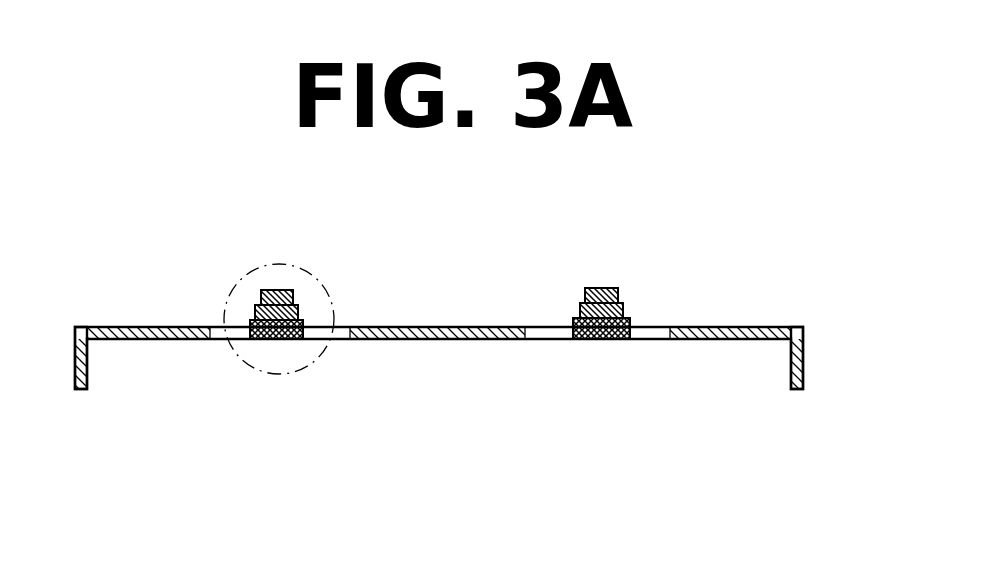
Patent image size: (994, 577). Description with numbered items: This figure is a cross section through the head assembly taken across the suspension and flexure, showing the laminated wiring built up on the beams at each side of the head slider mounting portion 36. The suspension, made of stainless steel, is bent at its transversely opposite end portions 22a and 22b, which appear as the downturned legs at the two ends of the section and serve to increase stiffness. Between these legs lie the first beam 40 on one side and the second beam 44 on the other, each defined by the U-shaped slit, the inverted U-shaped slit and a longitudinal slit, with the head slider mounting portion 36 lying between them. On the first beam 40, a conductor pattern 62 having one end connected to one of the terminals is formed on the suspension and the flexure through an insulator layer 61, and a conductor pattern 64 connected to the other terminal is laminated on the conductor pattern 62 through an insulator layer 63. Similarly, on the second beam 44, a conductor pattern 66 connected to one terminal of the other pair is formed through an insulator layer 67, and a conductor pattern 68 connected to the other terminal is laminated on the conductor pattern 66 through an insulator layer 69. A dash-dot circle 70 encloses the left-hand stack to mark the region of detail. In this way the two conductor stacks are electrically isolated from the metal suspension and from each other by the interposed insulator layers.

The head slider mounting portion 36 is at (437, 327).
The transversely opposite end portion of the suspension 22a is at (82, 382).
The transversely opposite end portion of the suspension 22b is at (796, 385).
The first beam 40 is at (274, 339).
The second beam 44 is at (598, 339).
The insulator layer 61 is at (300, 324).
The conductor pattern 62 is at (298, 310).
The insulator layer 63 is at (256, 312).
The conductor pattern 64 is at (266, 291).
The conductor pattern 66 is at (621, 306).
The insulator layer 67 is at (627, 322).
The conductor pattern 68 is at (596, 288).
The insulator layer 69 is at (583, 305).
The enlarged detail circle 70 is at (283, 264).